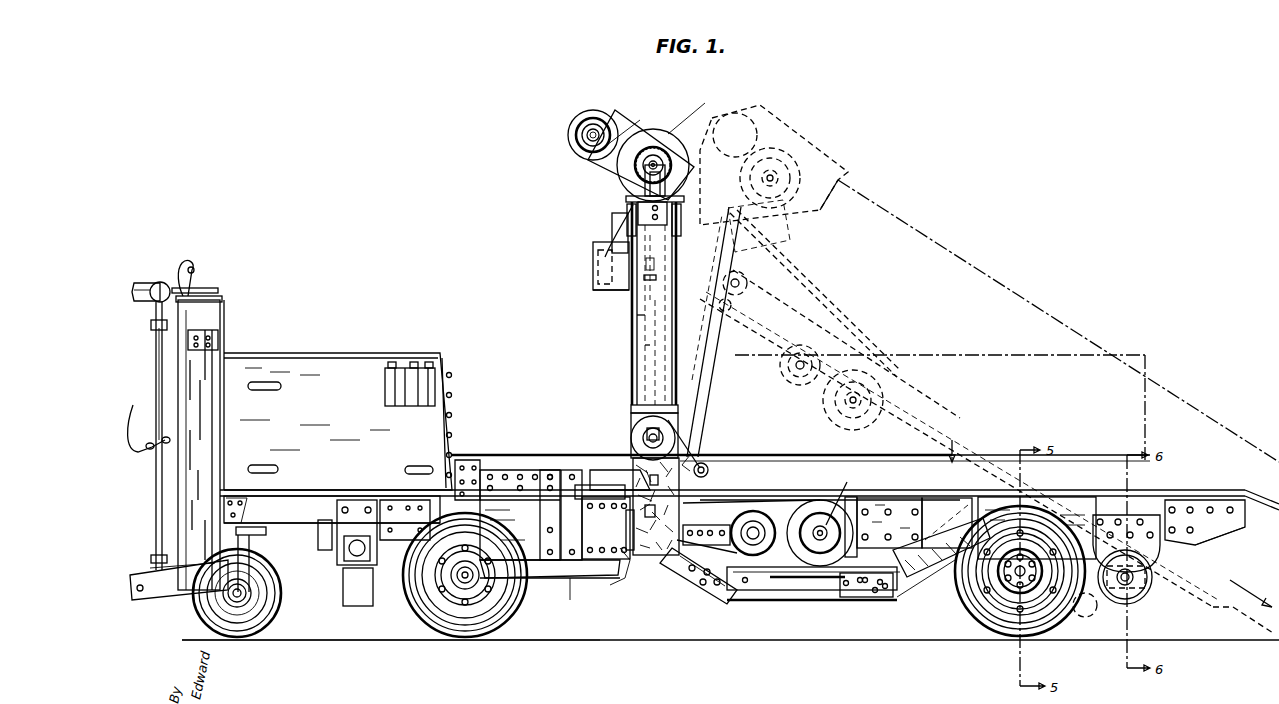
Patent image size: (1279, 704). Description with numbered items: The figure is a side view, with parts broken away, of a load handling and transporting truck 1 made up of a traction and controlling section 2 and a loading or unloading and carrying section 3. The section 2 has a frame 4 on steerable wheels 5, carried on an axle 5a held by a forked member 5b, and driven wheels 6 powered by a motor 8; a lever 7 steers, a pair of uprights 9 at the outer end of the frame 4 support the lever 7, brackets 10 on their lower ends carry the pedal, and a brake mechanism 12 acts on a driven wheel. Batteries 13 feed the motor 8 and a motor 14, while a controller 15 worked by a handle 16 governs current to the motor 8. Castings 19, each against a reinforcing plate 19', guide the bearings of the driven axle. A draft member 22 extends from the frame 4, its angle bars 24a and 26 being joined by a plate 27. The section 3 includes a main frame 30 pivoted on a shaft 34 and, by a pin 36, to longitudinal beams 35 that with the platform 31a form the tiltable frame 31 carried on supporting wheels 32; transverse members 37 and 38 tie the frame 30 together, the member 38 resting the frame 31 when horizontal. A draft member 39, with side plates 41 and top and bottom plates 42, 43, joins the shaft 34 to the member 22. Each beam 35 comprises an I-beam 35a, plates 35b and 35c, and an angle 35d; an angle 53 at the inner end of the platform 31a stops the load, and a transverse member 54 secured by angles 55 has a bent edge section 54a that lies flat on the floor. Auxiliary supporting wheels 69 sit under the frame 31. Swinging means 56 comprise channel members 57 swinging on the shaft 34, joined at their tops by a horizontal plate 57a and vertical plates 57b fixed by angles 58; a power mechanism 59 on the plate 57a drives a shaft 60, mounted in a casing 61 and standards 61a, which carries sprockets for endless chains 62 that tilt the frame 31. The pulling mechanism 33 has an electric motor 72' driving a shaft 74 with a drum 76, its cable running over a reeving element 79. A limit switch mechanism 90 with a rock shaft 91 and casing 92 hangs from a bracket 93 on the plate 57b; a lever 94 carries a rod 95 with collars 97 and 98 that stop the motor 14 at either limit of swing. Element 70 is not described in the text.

The load handling and transporting truck 1 is at (158, 508).
The traction and controlling section 2 is at (391, 608).
The loading or unloading and carrying section 3 is at (348, 462).
The frame 4 is at (290, 510).
The wheels 5 is at (272, 622).
The axle 5a is at (222, 605).
The forked member 5b is at (266, 530).
The wheels 6 is at (452, 638).
The lever 7 is at (155, 285).
The motor 8 is at (390, 500).
The uprights 9 is at (212, 465).
The brackets 10 is at (185, 580).
The brake mechanism 12 is at (325, 550).
The batteries 13 is at (430, 368).
The motor 14 is at (567, 135).
The controller 15 is at (150, 470).
The handle 16 is at (183, 270).
The castings 19 is at (338, 421).
The reinforcing plate 19' is at (441, 465).
The draft member 22 is at (702, 443).
The angle bars 24a is at (548, 580).
The angle bars 26 is at (482, 470).
The plate 27 is at (500, 478).
The main frame 30 is at (920, 578).
The tiltable frame 31 is at (942, 508).
The platform 31a is at (1185, 500).
The supporting wheels 32 is at (975, 615).
The pulling mechanism 33 is at (820, 522).
The shaft 34 is at (622, 575).
The longitudinal beams 35 is at (1090, 492).
The I-beam 35a is at (937, 500).
The plate 35b is at (906, 500).
The plate 35c is at (728, 597).
The angle 35d is at (758, 512).
The pin 36 is at (866, 594).
The transverse members 37 is at (700, 590).
The transverse member 38 is at (790, 590).
The draft member 39 is at (608, 528).
The side plates 41 is at (580, 520).
The top plate 42 is at (600, 485).
The bottom plate 43 is at (584, 598).
The angle 53 is at (702, 476).
The transverse member 54 is at (1218, 500).
The outer marginal edge section 54a is at (1262, 492).
The angles 55 is at (1210, 538).
The swinging means 56 is at (583, 137).
The channel members 57 is at (635, 390).
The horizontal plate 57a is at (626, 200).
The vertical plates 57b is at (684, 224).
The angles 58 is at (692, 214).
The power mechanism 59 is at (660, 135).
The shaft 60 is at (606, 178).
The casing 61 is at (687, 111).
The standards 61a is at (668, 178).
The endless chains 62 is at (632, 335).
The auxiliary supporting wheels 69 is at (1145, 595).
The roller bracket 70 is at (1155, 568).
The electric motor 72' is at (915, 477).
The driven shaft 74 is at (839, 490).
The drum 76 is at (848, 545).
The reeving element 79 is at (630, 432).
The limit switch mechanism 90 is at (604, 290).
The rock shaft 91 is at (612, 230).
The casing 92 is at (598, 265).
The bracket 93 is at (593, 252).
The lever 94 is at (615, 222).
The rod 95 is at (640, 372).
The adjustable collar 97 is at (620, 472).
The adjustable collar 98 is at (640, 300).